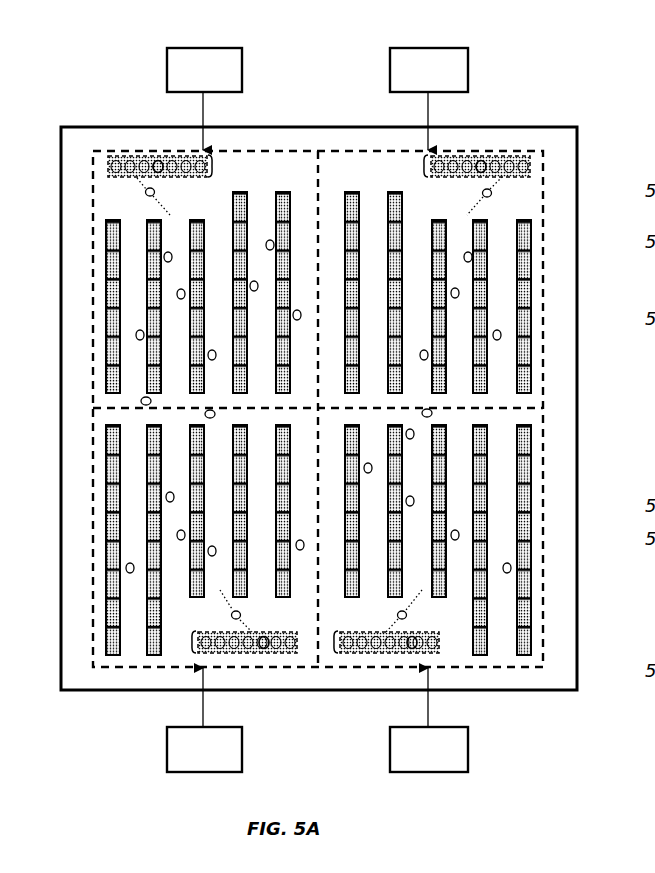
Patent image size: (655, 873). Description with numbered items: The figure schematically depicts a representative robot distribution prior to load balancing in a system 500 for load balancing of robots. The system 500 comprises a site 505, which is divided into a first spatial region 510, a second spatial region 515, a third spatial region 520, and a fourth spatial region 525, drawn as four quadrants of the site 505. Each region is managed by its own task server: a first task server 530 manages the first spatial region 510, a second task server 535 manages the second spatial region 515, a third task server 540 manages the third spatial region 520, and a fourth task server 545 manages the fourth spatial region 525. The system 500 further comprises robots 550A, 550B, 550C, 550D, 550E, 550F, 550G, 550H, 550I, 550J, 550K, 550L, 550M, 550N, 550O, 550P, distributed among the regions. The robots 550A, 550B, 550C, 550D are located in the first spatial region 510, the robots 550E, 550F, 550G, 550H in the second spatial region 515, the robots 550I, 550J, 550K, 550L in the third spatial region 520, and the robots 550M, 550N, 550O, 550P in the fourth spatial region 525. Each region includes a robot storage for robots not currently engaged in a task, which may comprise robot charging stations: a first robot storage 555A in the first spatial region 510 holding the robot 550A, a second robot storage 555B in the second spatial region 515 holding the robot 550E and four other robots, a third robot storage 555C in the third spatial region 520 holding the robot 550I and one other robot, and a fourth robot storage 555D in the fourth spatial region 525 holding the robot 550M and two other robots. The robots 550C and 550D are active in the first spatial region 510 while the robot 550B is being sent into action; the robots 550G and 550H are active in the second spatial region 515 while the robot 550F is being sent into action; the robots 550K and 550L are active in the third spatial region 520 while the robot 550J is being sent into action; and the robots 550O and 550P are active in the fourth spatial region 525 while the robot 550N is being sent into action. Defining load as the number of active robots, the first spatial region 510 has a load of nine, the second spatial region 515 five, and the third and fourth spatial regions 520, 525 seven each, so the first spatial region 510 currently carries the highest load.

The system for load balancing of robots 500 is at (56, 53).
The site 505 is at (107, 691).
The first spatial region 510 is at (306, 180).
The second spatial region 515 is at (367, 180).
The third spatial region 520 is at (309, 621).
The fourth spatial region 525 is at (367, 621).
The first task server 530 is at (223, 80).
The second task server 535 is at (447, 80).
The third task server 540 is at (223, 759).
The fourth task server 545 is at (447, 759).
The robot 550A is at (158, 159).
The robot 550B is at (145, 192).
The robot 550C is at (136, 333).
The robot 550D is at (293, 313).
The robot 550E is at (483, 160).
The robot 550F is at (491, 194).
The robot 550G is at (459, 292).
The robot 550H is at (501, 334).
The robot 550I is at (265, 649).
The robot 550J is at (232, 617).
The robot 550K is at (126, 566).
The robot 550L is at (208, 549).
The robot 550M is at (412, 649).
The robot 550N is at (406, 615).
The robot 550O is at (414, 503).
The robot 550P is at (459, 538).
The first robot storage 555A is at (213, 166).
The second robot storage 555B is at (422, 166).
The third robot storage 555C is at (191, 643).
The fourth robot storage 555D is at (333, 643).